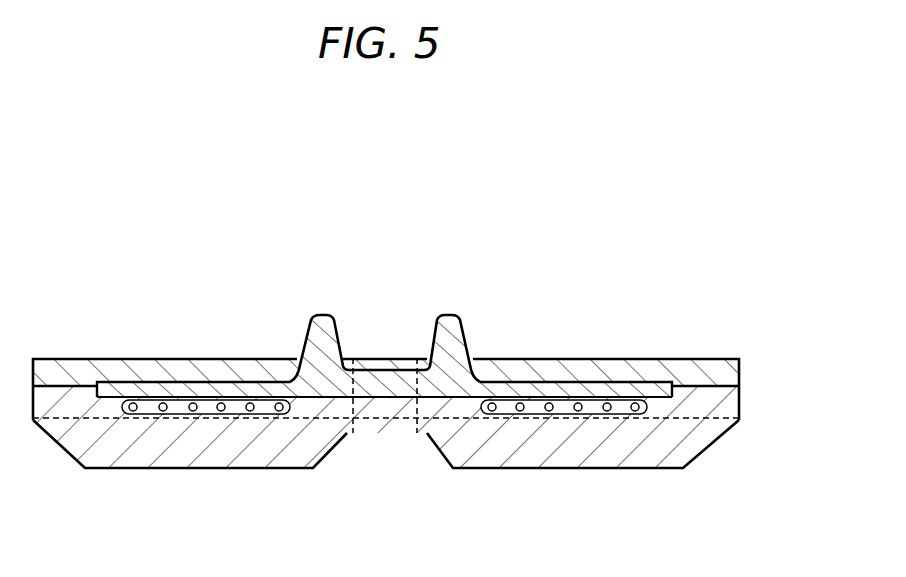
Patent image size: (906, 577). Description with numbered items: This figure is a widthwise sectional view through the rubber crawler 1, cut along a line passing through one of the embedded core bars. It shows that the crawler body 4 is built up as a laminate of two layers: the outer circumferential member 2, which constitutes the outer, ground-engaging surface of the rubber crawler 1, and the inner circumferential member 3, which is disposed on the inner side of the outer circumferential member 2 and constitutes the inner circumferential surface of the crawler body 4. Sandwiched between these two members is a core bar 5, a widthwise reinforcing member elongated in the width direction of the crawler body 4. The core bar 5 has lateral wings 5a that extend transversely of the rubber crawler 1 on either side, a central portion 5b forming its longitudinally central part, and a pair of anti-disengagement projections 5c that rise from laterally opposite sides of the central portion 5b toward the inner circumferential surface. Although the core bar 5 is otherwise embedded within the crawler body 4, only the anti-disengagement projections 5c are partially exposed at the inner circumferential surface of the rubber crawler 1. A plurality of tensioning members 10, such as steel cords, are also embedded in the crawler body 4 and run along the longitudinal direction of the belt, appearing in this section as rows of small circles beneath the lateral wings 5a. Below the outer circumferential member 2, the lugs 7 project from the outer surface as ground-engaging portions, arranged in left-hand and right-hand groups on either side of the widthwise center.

The rubber crawler 1 is at (700, 318).
The outer circumferential member 2 is at (730, 403).
The inner circumferential member 3 is at (722, 373).
The crawler body 4 is at (784, 327).
The core bar 5 is at (117, 398).
The lateral wing 5a is at (150, 388).
The central portion 5b is at (392, 388).
The anti-disengagement projection 5c is at (325, 320).
The lug 7 is at (133, 450).
The tensioning member 10 is at (193, 414).